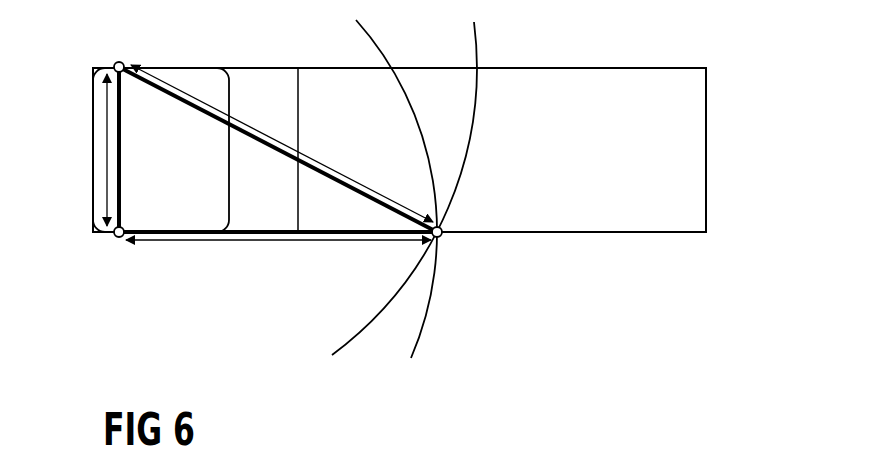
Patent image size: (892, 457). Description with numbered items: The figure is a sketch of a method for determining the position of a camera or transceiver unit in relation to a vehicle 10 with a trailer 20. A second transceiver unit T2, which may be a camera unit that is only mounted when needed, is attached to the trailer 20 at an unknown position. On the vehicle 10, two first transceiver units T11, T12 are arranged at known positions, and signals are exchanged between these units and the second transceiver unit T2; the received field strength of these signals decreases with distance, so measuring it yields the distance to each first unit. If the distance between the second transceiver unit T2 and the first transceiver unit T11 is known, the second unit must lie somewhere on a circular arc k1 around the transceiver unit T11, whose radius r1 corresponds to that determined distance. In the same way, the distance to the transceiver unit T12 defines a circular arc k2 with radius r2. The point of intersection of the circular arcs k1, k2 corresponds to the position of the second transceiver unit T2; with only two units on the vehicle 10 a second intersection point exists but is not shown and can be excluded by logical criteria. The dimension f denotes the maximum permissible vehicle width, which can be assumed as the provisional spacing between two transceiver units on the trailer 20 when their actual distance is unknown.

The vehicle 10 is at (92, 112).
The trailer 20 is at (557, 67).
The first transceiver unit T11 is at (265, 256).
The first transceiver unit T12 is at (269, 129).
The second transceiver unit T2 is at (453, 248).
The circular arc k1 is at (430, 303).
The circular arc k2 is at (470, 122).
The maximum permissible vehicle width f is at (104, 150).
The radius r1 is at (278, 252).
The radius r2 is at (282, 143).